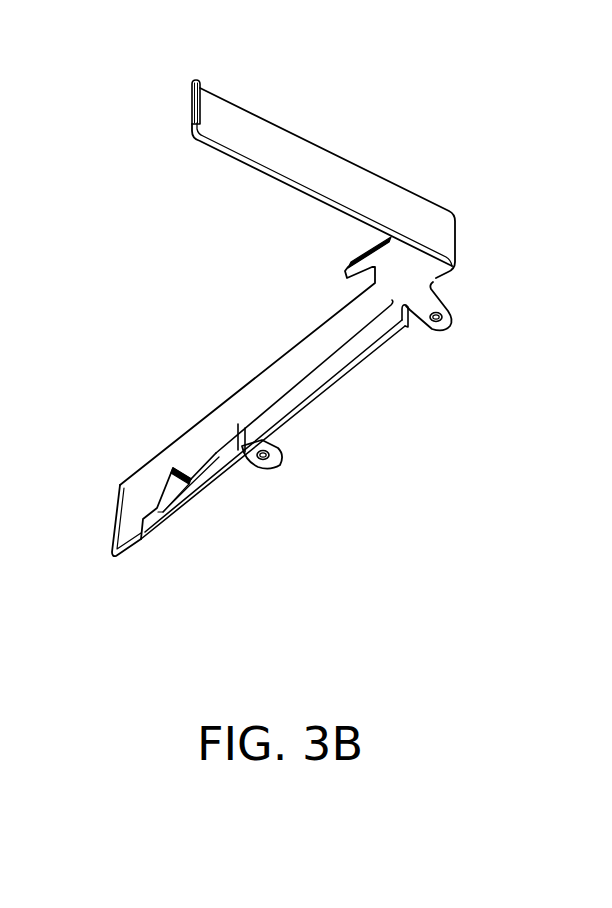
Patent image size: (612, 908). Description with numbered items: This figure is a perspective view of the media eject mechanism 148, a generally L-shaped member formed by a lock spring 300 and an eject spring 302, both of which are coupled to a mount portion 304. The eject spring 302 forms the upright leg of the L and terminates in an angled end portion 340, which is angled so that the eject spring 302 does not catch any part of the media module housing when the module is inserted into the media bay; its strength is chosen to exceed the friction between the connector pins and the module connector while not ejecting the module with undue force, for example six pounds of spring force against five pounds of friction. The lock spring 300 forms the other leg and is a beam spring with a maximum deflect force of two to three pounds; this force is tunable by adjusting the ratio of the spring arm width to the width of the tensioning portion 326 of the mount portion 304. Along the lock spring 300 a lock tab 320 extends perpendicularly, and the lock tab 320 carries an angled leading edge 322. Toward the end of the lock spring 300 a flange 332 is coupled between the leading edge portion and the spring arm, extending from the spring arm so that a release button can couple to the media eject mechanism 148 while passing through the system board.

The media eject mechanism 148 is at (146, 273).
The lock spring 300 is at (261, 372).
The eject spring 302 is at (309, 139).
The mount portion 304 is at (392, 357).
The lock tab 320 is at (173, 491).
The angled leading edge 322 is at (153, 497).
The tensioning portion 326 is at (336, 381).
The flange 332 is at (127, 560).
The angled end portion 340 is at (193, 78).